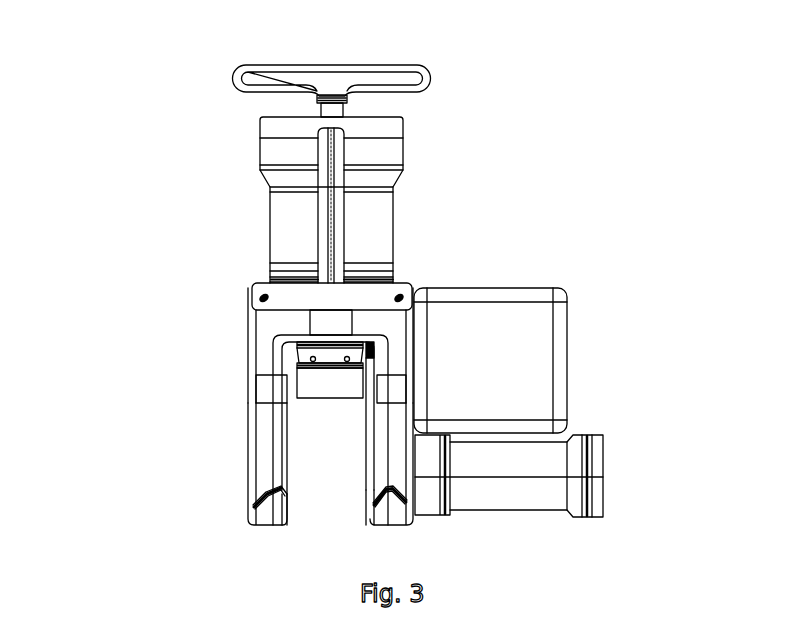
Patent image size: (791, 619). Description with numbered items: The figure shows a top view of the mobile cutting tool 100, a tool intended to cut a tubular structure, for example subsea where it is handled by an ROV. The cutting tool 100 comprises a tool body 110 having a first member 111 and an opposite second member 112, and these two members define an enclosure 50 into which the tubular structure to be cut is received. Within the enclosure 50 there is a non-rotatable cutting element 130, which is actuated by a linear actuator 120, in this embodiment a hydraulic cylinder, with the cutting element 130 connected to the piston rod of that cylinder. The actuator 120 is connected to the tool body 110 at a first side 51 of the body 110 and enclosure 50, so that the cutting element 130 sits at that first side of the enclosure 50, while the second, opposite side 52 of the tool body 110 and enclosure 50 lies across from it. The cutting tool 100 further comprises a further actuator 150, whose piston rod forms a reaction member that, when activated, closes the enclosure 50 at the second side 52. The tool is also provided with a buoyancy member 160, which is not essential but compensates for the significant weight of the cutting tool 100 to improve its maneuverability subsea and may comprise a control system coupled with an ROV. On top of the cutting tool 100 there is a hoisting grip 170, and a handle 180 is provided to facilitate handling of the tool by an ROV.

The mobile cutting tool 100 is at (91, 142).
The handle 180 is at (335, 86).
The actuator 120 is at (368, 220).
The hoisting grip 170 is at (320, 298).
The first side 51 is at (235, 313).
The enclosure 50 is at (315, 452).
The second side 52 is at (230, 520).
The tool body 110 is at (268, 349).
The first member 111 is at (270, 517).
The second member 112 is at (390, 517).
The cutting element 130 is at (343, 383).
The buoyancy member 160 is at (505, 362).
The further actuator 150 is at (540, 468).